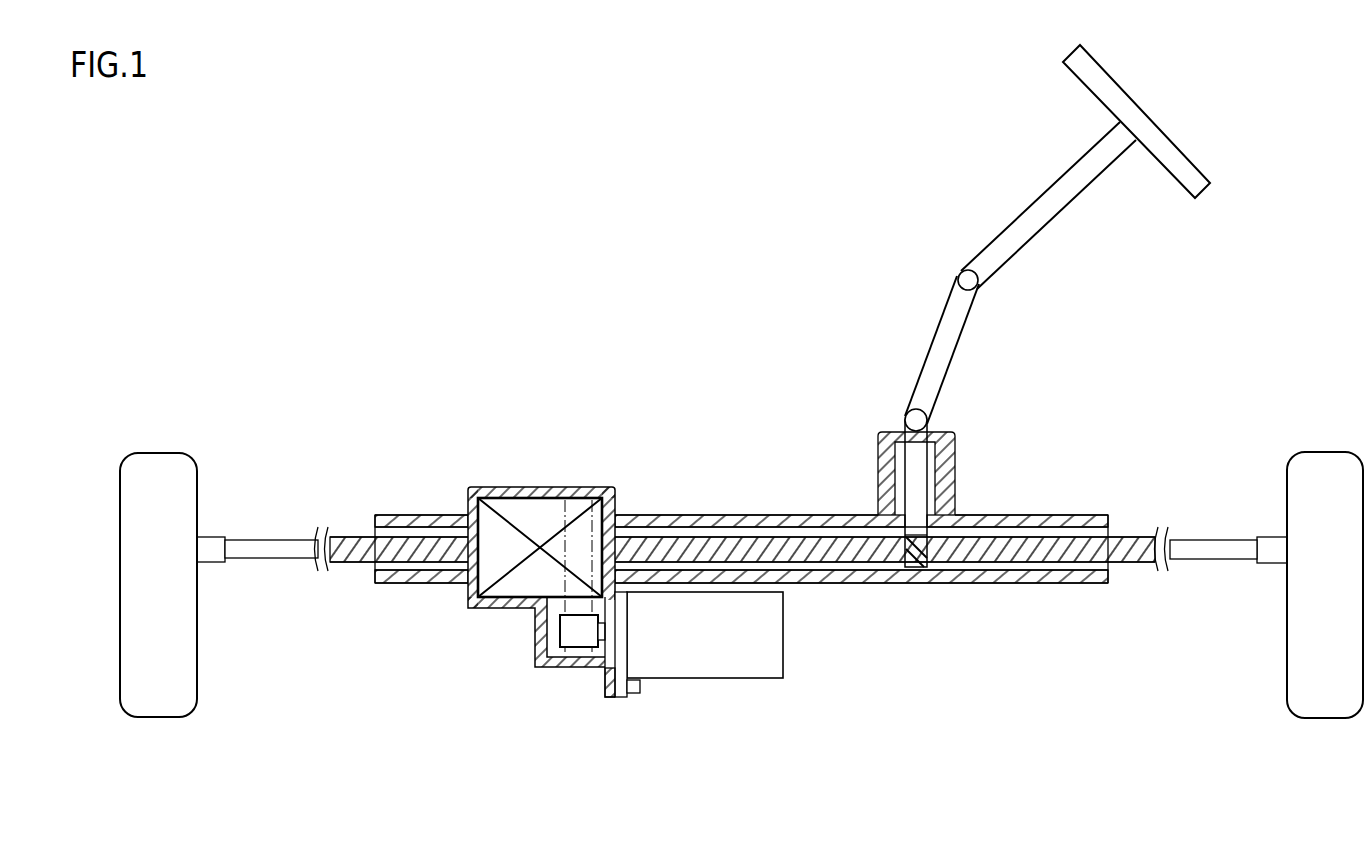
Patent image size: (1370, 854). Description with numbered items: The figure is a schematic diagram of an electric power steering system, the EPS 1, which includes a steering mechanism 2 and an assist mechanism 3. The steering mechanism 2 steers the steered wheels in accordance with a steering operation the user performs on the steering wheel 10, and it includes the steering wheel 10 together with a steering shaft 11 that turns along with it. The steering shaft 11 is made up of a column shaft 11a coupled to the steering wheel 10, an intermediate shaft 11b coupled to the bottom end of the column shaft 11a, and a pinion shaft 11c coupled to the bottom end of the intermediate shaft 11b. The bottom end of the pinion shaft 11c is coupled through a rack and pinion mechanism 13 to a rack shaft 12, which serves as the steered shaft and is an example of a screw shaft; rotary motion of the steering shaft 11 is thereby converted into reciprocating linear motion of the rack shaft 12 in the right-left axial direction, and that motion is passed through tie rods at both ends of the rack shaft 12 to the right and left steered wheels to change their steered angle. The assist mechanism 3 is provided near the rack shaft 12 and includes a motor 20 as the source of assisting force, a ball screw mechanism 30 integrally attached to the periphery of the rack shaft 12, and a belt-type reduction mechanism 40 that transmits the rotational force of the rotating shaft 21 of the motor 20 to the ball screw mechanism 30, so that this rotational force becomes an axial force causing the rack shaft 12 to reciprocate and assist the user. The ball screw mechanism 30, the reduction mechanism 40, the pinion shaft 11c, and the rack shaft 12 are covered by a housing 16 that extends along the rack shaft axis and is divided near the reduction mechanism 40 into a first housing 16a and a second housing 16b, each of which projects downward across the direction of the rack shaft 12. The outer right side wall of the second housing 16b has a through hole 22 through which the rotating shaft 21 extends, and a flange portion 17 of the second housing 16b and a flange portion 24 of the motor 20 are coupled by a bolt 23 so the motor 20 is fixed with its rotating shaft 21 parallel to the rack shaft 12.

The EPS 1 is at (752, 185).
The steering mechanism 2 is at (1160, 262).
The assist mechanism 3 is at (626, 484).
The steering wheel 10 is at (1115, 72).
The steering shaft 11 is at (918, 232).
The column shaft 11a is at (990, 248).
The intermediate shaft 11b is at (932, 338).
The pinion shaft 11c is at (887, 432).
The rack shaft 12 is at (803, 584).
The rack and pinion mechanism 13 is at (921, 568).
The housing 16 is at (622, 434).
The first housing 16a is at (533, 487).
The second housing 16b is at (588, 487).
The flange portion 17 is at (610, 697).
The motor 20 is at (706, 680).
The rotating shaft 21 is at (600, 640).
The through hole 22 is at (612, 612).
The bolt 23 is at (637, 691).
The flange portion 24 is at (619, 698).
The ball screw mechanism 30 is at (470, 591).
The belt-type reduction mechanism 40 is at (558, 603).